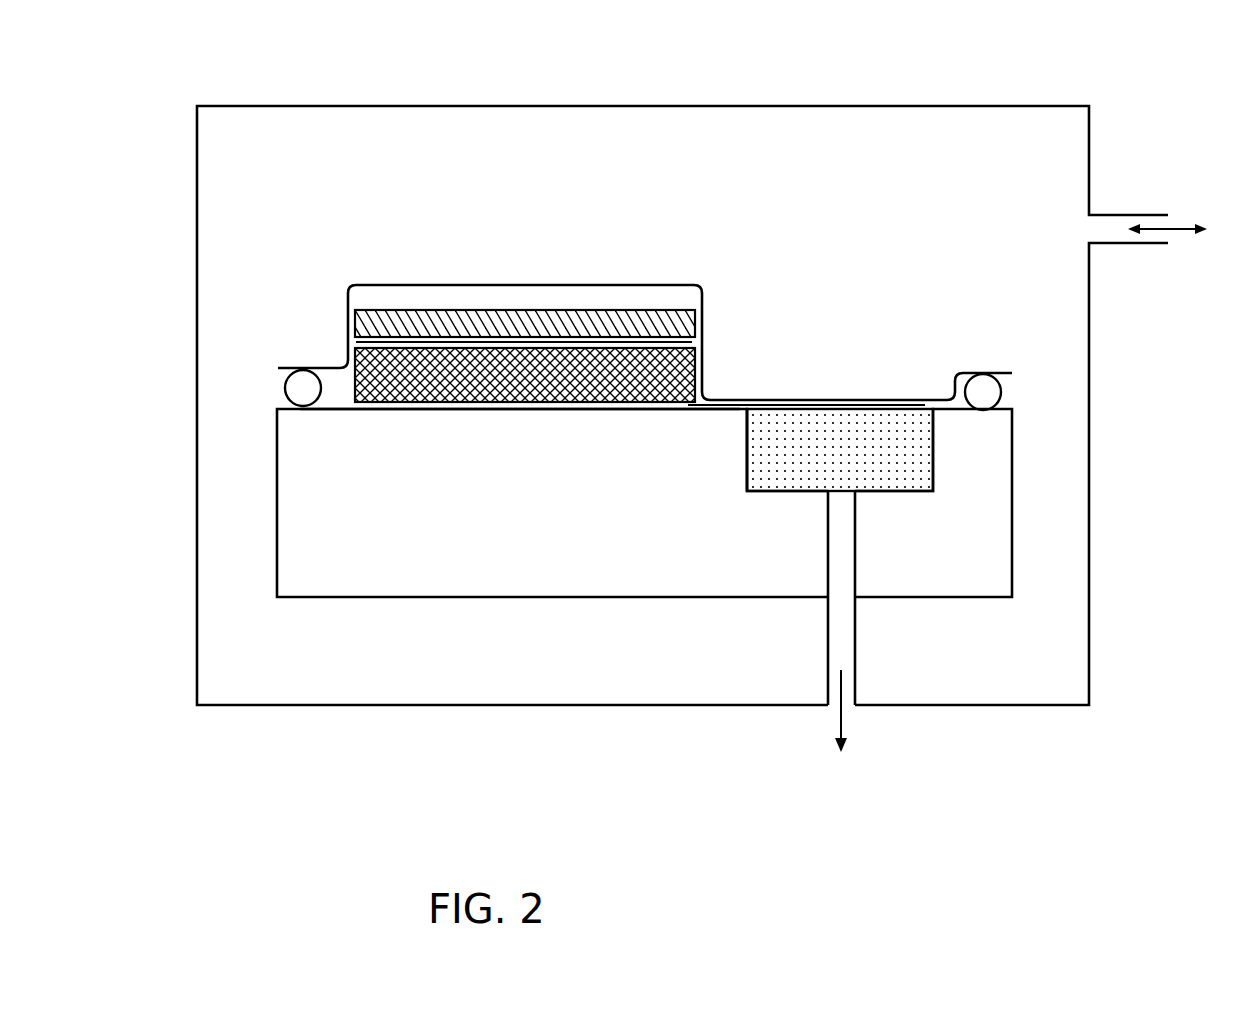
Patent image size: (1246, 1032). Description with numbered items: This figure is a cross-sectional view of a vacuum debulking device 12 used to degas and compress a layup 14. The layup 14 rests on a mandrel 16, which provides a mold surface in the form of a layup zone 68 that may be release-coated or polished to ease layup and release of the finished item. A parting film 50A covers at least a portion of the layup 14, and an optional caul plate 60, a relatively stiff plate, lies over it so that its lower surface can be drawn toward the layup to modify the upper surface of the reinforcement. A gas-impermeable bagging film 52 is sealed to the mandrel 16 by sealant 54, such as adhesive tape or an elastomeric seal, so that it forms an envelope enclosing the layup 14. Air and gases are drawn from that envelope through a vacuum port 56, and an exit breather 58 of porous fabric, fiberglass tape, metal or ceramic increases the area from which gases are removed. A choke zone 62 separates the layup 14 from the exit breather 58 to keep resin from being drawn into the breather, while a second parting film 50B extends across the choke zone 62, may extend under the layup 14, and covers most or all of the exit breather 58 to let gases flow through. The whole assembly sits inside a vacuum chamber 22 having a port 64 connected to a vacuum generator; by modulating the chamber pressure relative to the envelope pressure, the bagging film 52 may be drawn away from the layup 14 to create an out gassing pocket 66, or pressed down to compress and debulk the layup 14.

The vacuum debulking device 12 is at (811, 38).
The layup 14 is at (697, 368).
The mandrel 16 is at (541, 521).
The vacuum chamber 22 is at (687, 106).
The parting film 50A is at (692, 310).
The parting film 50B is at (843, 405).
The bagging film 52 is at (596, 285).
The sealant 54 is at (286, 393).
The vacuum port 56 is at (828, 648).
The exit breather 58 is at (747, 468).
The caul plate 60 is at (457, 309).
The choke zone 62 is at (729, 424).
The port 64 is at (1147, 215).
The out gassing pocket 66 is at (397, 289).
The layup zone 68 is at (472, 421).